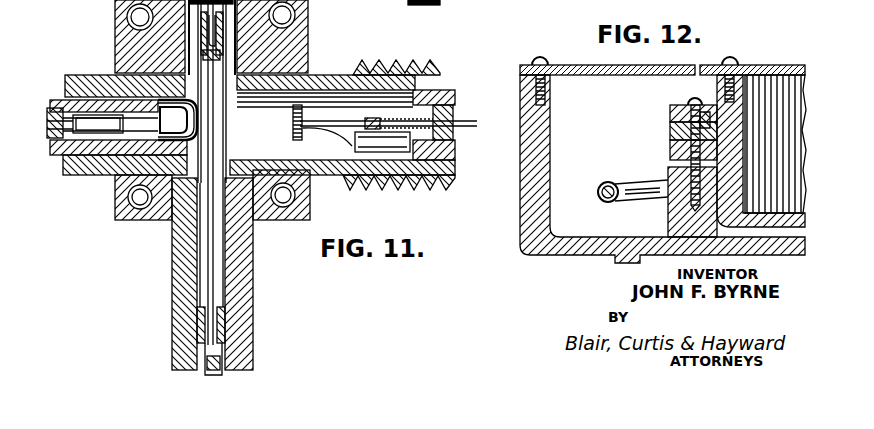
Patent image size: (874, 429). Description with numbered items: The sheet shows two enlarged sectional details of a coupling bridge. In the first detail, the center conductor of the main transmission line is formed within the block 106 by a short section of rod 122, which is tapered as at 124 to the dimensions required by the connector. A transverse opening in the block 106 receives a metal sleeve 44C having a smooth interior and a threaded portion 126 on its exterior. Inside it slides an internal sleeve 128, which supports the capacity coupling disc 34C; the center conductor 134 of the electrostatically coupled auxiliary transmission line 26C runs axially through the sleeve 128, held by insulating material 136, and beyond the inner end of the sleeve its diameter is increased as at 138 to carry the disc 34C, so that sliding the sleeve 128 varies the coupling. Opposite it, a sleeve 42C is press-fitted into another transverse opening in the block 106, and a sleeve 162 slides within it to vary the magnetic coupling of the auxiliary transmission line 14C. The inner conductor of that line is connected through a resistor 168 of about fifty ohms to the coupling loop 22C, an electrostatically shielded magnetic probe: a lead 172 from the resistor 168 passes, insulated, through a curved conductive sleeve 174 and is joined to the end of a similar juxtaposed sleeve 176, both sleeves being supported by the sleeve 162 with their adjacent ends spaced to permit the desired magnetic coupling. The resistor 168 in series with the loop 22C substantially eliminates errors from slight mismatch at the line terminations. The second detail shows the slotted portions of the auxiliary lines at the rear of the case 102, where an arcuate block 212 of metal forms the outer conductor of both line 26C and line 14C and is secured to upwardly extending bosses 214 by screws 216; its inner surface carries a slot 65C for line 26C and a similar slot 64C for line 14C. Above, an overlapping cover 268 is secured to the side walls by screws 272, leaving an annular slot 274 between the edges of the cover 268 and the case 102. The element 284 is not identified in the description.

In FIG. 11, the block 106 is at (311, 34).
In FIG. 11, the rod 122 is at (214, 124).
In FIG. 11, the tapered portion 124 is at (203, 265).
In FIG. 11, the sleeve 42C is at (103, 177).
In FIG. 11, the metal sleeve 44C is at (328, 176).
In FIG. 11, the lead 172 is at (125, 87).
In FIG. 11, the sleeve 162 is at (83, 100).
In FIG. 11, the resistor 168 is at (57, 157).
In FIG. 11, the coupling loop 22C is at (125, 165).
In FIG. 11, the curved sleeve 174 is at (178, 100).
In FIG. 11, the sleeve 176 is at (178, 124).
In FIG. 11, the threaded portion 126 is at (436, 184).
In FIG. 11, the internal sleeve 128 is at (443, 90).
In FIG. 11, the insulating material 136 is at (453, 110).
In FIG. 11, the capacity coupling disc 34C is at (296, 130).
In FIG. 11, the increased-diameter portion 138 is at (317, 123).
In FIG. 11, the center conductor 134 is at (478, 123).
In FIG. 11, the spring 284 is at (364, 174).
In FIG. 12, the case 102 is at (522, 234).
In FIG. 12, the annular slot 274 is at (697, 66).
In FIG. 12, the screws 272 is at (736, 63).
In FIG. 12, the cover 268 is at (790, 65).
In FIG. 12, the slot 64C is at (712, 155).
In FIG. 12, the slot 65C is at (706, 118).
In FIG. 12, the arcuate block 212 is at (670, 112).
In FIG. 12, the auxiliary transmission line 26C is at (670, 130).
In FIG. 12, the auxiliary transmission line 14C is at (670, 150).
In FIG. 12, the screws 216 is at (692, 100).
In FIG. 12, the bosses 214 is at (680, 222).